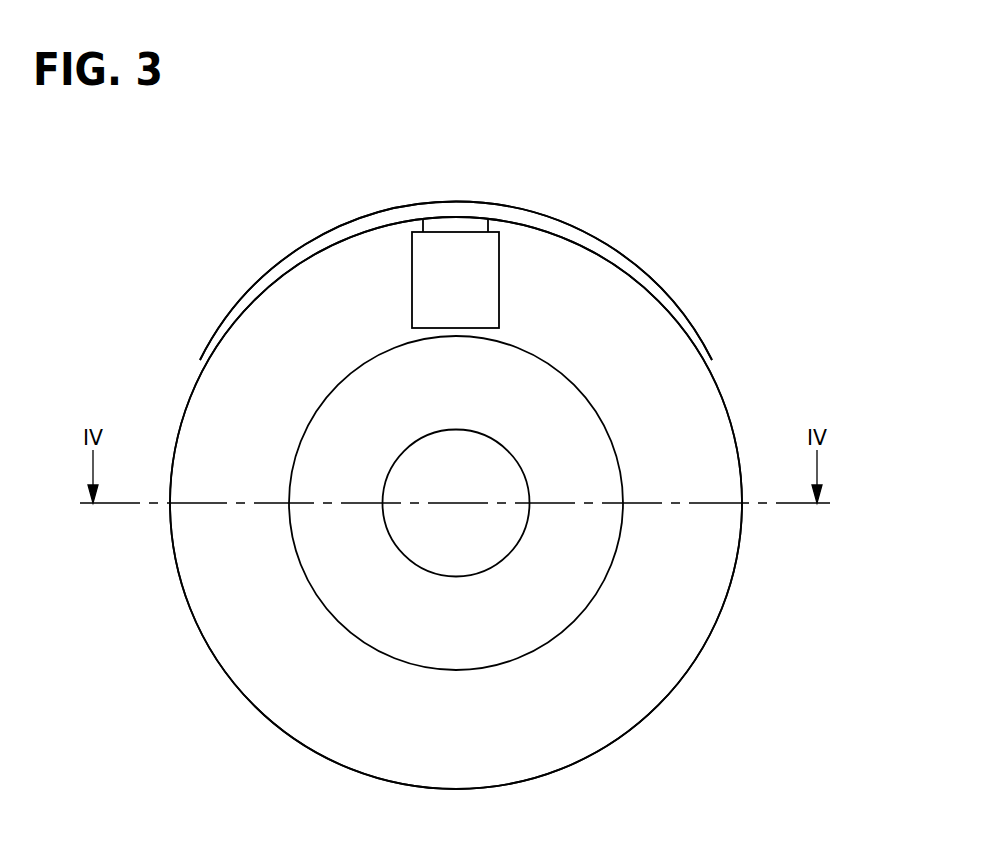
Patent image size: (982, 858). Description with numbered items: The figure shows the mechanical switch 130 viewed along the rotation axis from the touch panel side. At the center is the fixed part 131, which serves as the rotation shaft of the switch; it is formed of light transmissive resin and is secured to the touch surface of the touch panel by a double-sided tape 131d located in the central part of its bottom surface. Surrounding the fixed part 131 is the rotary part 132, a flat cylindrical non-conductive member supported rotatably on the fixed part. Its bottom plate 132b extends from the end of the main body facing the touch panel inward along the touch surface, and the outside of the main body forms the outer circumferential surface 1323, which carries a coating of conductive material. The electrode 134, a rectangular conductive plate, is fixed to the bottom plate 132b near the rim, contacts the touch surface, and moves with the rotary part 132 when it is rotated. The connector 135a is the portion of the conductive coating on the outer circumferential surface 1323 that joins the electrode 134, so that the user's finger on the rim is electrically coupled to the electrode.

The mechanical switch 130 is at (392, 217).
The fixed part 131 is at (357, 408).
The double-sided tape 131d is at (410, 475).
The rotary part 132 is at (654, 285).
The bottom plate 132b is at (645, 353).
The outer circumferential surface 1323 is at (456, 281).
The electrode 134 is at (422, 270).
The connector 135a is at (459, 223).